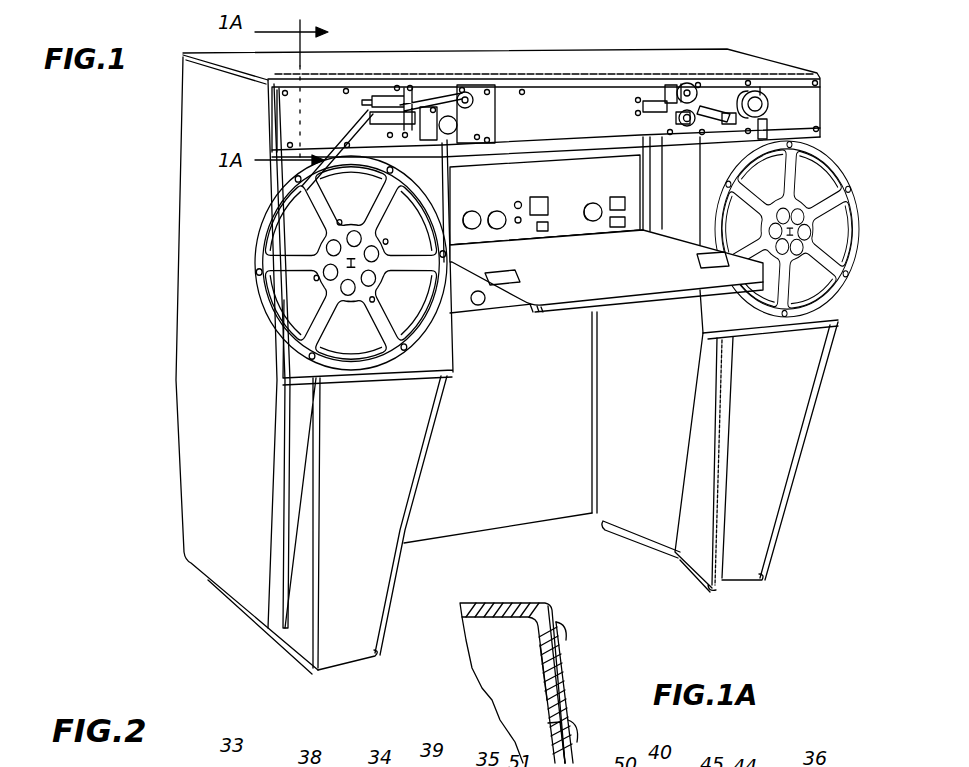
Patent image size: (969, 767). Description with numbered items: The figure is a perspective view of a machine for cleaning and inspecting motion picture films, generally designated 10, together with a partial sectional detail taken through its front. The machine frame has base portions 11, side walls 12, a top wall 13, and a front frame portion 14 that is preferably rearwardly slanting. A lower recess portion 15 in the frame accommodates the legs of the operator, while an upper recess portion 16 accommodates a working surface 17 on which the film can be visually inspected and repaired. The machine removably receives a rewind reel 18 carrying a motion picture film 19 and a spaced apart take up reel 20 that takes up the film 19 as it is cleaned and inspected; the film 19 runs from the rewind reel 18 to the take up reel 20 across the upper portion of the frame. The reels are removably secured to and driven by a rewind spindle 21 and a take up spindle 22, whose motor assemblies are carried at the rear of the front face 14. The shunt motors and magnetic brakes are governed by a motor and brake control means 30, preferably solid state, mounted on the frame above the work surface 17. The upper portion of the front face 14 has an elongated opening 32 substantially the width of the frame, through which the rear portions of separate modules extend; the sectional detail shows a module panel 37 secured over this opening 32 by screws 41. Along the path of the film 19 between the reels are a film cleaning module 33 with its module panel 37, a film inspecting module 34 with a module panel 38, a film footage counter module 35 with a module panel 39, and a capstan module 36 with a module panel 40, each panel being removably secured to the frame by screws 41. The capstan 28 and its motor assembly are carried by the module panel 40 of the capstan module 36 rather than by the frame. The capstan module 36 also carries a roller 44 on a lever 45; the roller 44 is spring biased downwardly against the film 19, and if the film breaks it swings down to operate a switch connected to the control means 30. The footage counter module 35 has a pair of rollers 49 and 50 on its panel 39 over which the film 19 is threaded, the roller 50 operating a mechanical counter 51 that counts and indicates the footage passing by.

In FIG. 1, the machine for cleaning and inspecting motion picture films 10 is at (152, 190).
In FIG. 1, the base portions 11 is at (380, 568).
In FIG. 1, the side walls 12 is at (183, 343).
In FIG. 1A, the side walls 12 is at (495, 688).
In FIG. 1, the top wall 13 is at (500, 62).
In FIG. 1A, the top wall 13 is at (500, 603).
In FIG. 1, the front frame portion 14 is at (280, 172).
In FIG. 1A, the front frame portion 14 is at (548, 614).
In FIG. 1, the lower recess portion 15 is at (618, 502).
In FIG. 1, the upper recess portion 16 is at (677, 227).
In FIG. 1, the working surface 17 is at (630, 288).
In FIG. 1, the rewind reel 18 is at (262, 246).
In FIG. 1, the motion picture film 19 is at (352, 133).
In FIG. 1, the take up reel 20 is at (858, 252).
In FIG. 1, the rewind spindle 21 is at (345, 250).
In FIG. 1, the take up spindle 22 is at (800, 246).
In FIG. 1, the capstan 28 is at (763, 103).
In FIG. 1, the motor and brake control means 30 is at (568, 228).
In FIG. 1A, the elongated opening 32 is at (540, 648).
In FIG. 1, the film cleaning module 33 is at (337, 72).
In FIG. 1, the film inspecting module 34 is at (432, 70).
In FIG. 1, the film footage counter module 35 is at (603, 70).
In FIG. 1, the capstan module 36 is at (783, 70).
In FIG. 1, the module panel 37 is at (300, 113).
In FIG. 1A, the module panel 37 is at (566, 676).
In FIG. 1, the module panel 38 is at (443, 90).
In FIG. 1, the module panel 39 is at (530, 92).
In FIG. 1, the module panel 40 is at (793, 92).
In FIG. 1, the screws 41 is at (285, 93).
In FIG. 1A, the screws 41 is at (566, 634).
In FIG. 1, the roller 44 is at (733, 113).
In FIG. 1, the lever 45 is at (712, 110).
In FIG. 1, the roller 49 is at (690, 130).
In FIG. 1, the roller 50 is at (690, 83).
In FIG. 1, the mechanical counter 51 is at (652, 100).